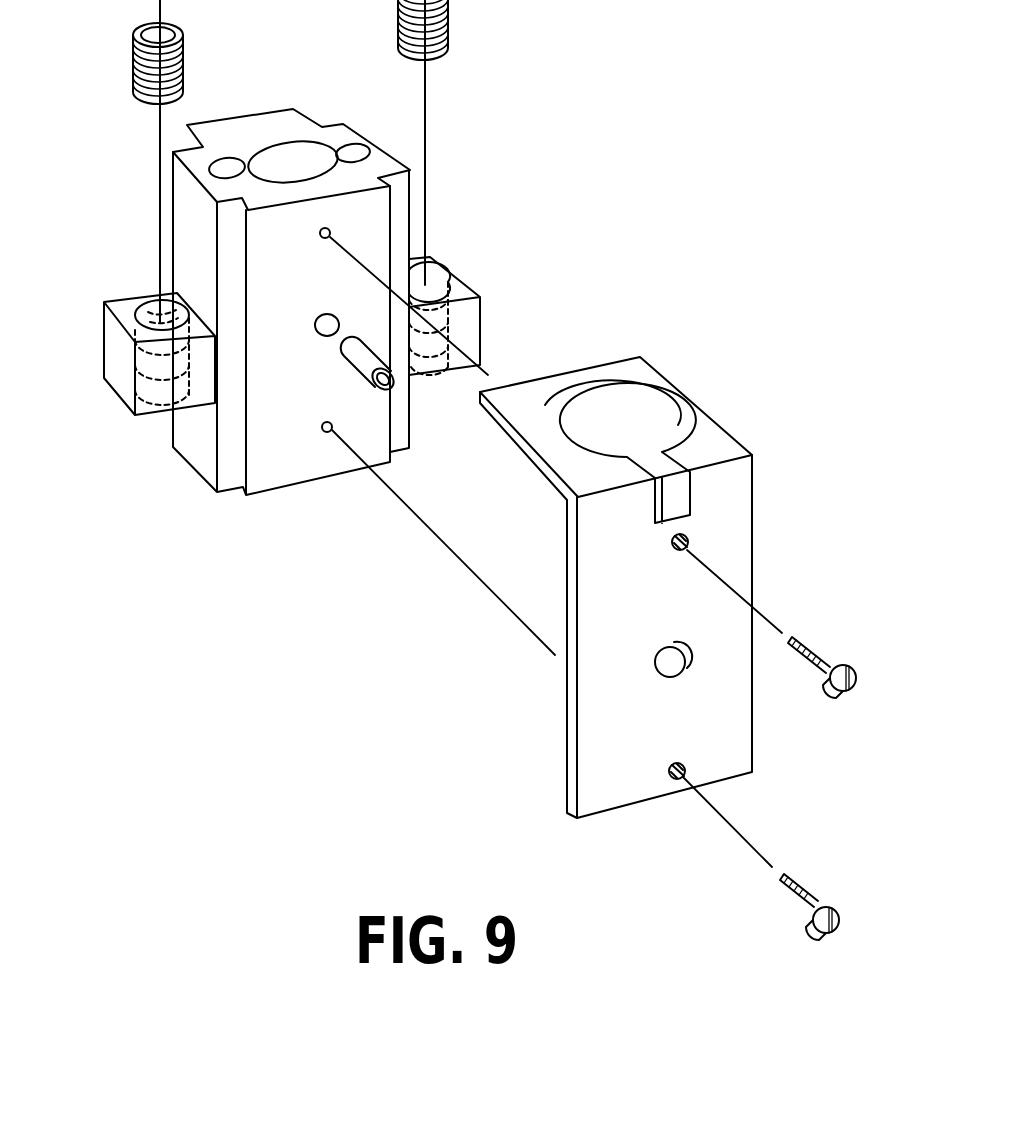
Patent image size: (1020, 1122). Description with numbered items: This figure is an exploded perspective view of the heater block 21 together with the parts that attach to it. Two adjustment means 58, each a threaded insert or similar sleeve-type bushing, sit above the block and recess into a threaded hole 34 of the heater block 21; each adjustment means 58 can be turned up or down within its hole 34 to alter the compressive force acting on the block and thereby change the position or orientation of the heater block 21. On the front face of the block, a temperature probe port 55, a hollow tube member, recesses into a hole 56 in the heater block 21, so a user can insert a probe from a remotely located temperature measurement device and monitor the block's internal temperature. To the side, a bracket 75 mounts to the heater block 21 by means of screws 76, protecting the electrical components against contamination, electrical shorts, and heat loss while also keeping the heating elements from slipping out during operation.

The heater block 21 is at (300, 448).
The hole 34 is at (153, 298).
The temperature probe port 55 is at (408, 380).
The hole 56 is at (310, 320).
The adjustment means 58 is at (133, 98).
The bracket 75 is at (722, 517).
The screws 76 is at (856, 678).